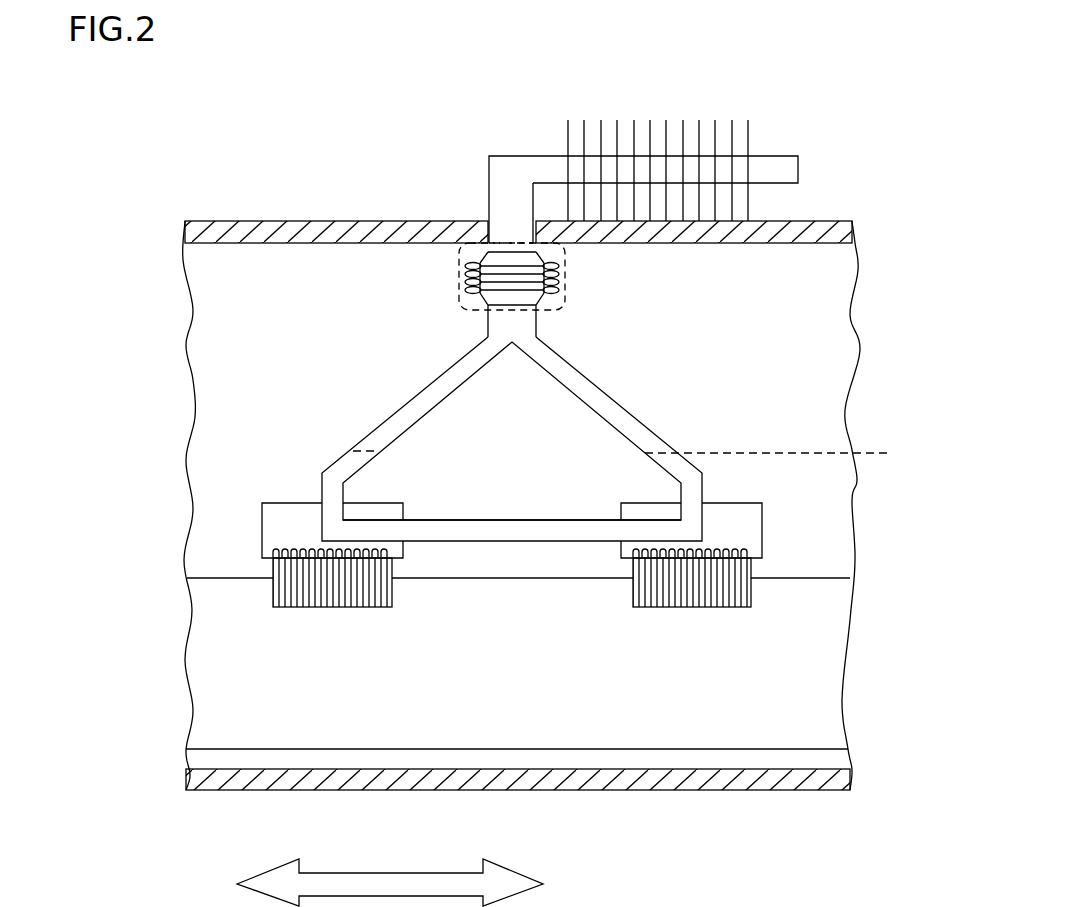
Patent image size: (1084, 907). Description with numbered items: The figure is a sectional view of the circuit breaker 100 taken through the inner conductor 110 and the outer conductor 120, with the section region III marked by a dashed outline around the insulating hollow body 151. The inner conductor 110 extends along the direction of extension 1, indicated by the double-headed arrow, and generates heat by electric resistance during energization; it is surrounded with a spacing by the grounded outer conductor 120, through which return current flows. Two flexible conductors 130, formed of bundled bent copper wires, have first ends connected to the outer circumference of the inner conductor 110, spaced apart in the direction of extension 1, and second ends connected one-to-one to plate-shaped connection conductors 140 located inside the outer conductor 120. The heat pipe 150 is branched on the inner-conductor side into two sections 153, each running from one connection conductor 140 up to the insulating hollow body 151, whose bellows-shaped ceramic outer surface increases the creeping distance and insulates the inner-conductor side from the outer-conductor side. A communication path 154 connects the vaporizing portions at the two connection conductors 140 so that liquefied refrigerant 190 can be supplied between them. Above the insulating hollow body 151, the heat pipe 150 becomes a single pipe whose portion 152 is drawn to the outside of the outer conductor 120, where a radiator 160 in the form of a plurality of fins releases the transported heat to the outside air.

The circuit breaker 100 is at (868, 97).
The inner conductor 110 is at (818, 670).
The outer conductor 120 is at (326, 220).
The flexible conductor 130 is at (752, 592).
The connection conductor 140 is at (763, 525).
The heat pipe 150 is at (787, 155).
The insulating hollow body 151 is at (472, 262).
The portion of heat pipe drawn to outside of outer conductor 152 is at (507, 141).
The section 153 is at (395, 391).
The communication path 154 is at (520, 542).
The radiator 160 is at (568, 126).
The refrigerant 190 is at (641, 453).
The section III detail region III is at (456, 272).
The direction of extension 1 is at (528, 879).